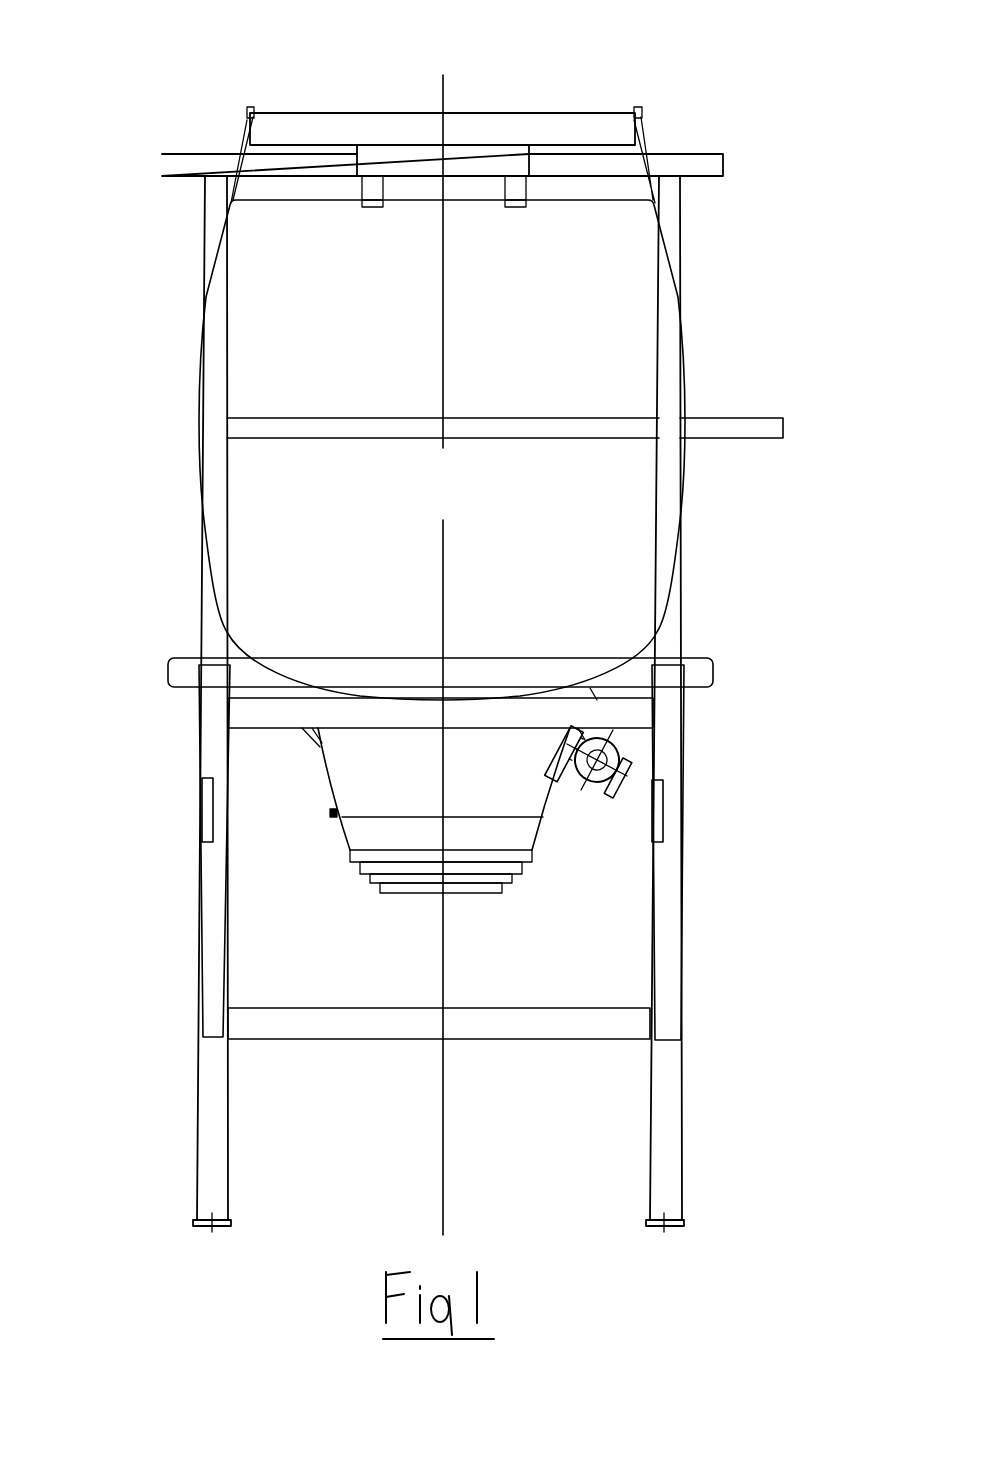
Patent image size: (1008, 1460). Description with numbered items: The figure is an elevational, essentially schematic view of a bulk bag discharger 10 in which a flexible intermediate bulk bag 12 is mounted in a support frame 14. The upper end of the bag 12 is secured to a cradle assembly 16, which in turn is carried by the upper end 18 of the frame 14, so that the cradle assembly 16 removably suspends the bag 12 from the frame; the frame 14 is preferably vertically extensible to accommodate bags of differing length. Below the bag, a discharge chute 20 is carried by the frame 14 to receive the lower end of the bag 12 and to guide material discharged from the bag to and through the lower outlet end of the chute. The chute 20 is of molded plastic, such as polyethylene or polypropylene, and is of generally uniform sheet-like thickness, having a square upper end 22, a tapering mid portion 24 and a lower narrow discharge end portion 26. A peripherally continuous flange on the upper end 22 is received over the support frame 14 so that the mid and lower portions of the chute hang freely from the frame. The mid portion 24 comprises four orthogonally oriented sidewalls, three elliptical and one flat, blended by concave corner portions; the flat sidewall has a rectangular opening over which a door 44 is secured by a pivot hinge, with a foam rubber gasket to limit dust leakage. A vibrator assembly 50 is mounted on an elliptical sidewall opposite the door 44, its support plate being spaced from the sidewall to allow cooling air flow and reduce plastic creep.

The bulk bag discharger 10 is at (818, 300).
The flexible intermediate bulk bag 12 is at (613, 370).
The support frame 14 is at (670, 493).
The cradle assembly 16 is at (597, 128).
The upper end of frame 18 is at (697, 165).
The discharge chute 20 is at (471, 822).
The upper end of chute 22 is at (188, 658).
The tapering mid portion 24 is at (340, 767).
The lower narrow discharge end portion 26 is at (370, 882).
The door 44 is at (333, 775).
The vibrator assembly 50 is at (612, 758).